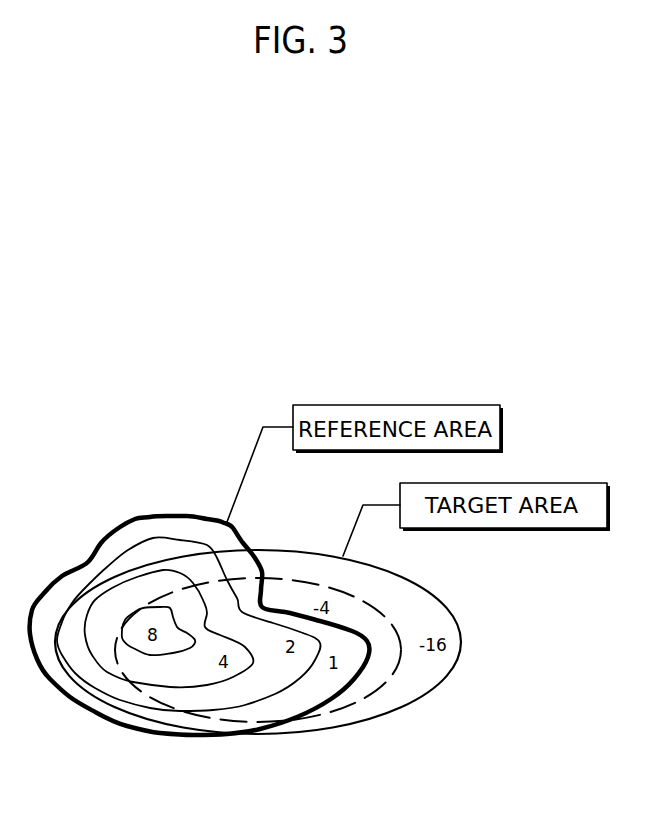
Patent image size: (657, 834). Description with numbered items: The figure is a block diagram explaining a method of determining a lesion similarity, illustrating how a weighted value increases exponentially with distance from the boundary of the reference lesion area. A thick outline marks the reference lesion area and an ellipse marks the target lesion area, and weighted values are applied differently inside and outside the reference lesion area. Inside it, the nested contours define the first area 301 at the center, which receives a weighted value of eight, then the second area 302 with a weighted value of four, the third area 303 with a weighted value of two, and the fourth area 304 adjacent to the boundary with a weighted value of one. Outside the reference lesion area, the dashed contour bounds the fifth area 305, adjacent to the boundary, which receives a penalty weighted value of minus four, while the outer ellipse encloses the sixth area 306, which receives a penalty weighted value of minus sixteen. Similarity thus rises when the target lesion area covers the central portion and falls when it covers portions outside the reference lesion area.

The area 1 301 is at (135, 650).
The area 2 302 is at (160, 688).
The area 3 303 is at (219, 703).
The area 4 304 is at (315, 703).
The area 5 305 is at (358, 702).
The area 6 306 is at (418, 703).